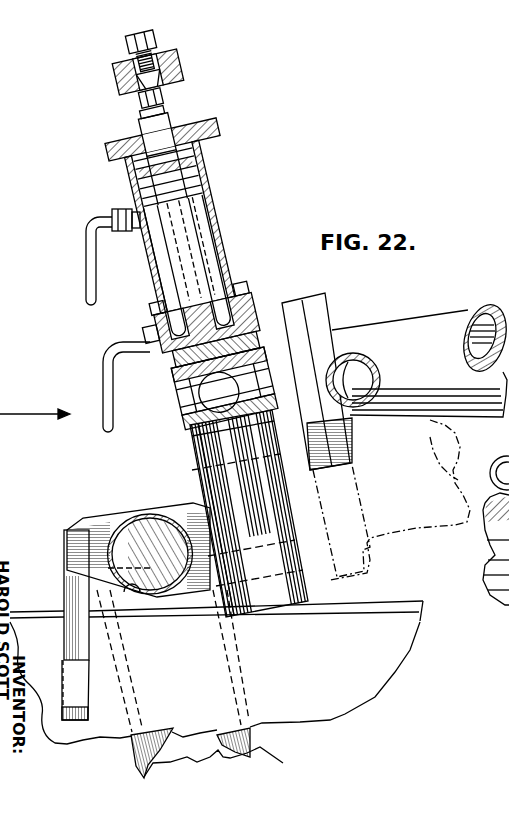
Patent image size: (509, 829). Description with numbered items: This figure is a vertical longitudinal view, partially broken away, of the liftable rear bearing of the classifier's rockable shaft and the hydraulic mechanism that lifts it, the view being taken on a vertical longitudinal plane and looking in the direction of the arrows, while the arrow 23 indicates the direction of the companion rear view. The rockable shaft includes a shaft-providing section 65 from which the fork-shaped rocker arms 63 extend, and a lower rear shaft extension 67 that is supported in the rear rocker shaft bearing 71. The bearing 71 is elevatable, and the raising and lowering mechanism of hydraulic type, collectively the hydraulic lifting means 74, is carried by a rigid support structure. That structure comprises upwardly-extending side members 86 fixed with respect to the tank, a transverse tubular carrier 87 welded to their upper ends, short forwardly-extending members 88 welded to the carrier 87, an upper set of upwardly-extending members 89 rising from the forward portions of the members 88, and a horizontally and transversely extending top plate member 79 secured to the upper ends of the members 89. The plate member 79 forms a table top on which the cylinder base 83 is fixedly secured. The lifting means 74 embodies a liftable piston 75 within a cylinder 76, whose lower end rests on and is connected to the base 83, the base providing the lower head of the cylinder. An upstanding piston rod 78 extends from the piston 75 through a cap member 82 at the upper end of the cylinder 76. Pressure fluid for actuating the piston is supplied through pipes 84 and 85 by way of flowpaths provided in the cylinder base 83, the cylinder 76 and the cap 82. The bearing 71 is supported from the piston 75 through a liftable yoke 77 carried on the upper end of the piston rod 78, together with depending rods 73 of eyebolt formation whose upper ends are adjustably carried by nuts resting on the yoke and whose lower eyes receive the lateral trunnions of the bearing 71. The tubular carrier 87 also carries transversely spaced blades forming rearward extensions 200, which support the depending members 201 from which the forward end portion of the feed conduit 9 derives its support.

The feed conduit 9 is at (216, 627).
The arrow 23 is at (35, 406).
The rocker arms 63 is at (360, 352).
The shaft-providing section 65 is at (419, 452).
The rear shaft extension 67 is at (172, 400).
The rear rocker shaft bearing 71 is at (181, 427).
The depending rods 73 is at (103, 119).
The hydraulic lifting means 74 is at (78, 255).
The piston 75 is at (200, 168).
The cylinder 76 is at (226, 228).
The lifting yoke 77 is at (180, 66).
The piston rod 78 is at (140, 130).
The top plate member 79 is at (157, 363).
The cap member 82 is at (220, 126).
The cylinder base 83 is at (255, 308).
The pipe 84 is at (103, 366).
The pipe 85 is at (78, 261).
The side members 86 is at (267, 750).
The transverse tubular carrier 87 is at (148, 590).
The forwardly-extending members 88 is at (182, 594).
The upwardly-extending members 89 is at (190, 463).
The rearward extensions 200 is at (95, 528).
The depending members 201 is at (64, 600).